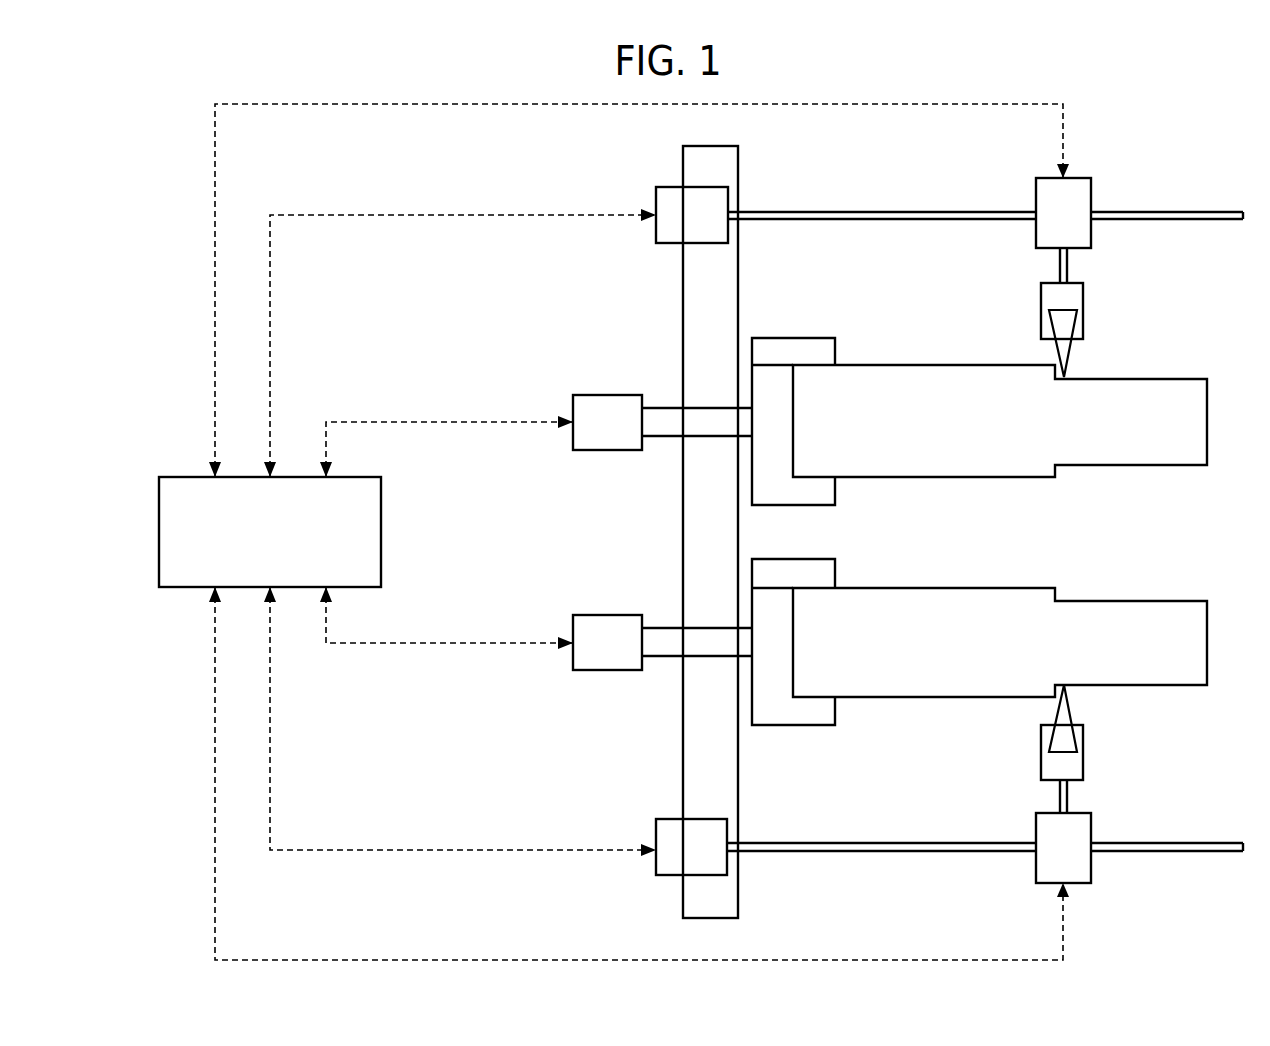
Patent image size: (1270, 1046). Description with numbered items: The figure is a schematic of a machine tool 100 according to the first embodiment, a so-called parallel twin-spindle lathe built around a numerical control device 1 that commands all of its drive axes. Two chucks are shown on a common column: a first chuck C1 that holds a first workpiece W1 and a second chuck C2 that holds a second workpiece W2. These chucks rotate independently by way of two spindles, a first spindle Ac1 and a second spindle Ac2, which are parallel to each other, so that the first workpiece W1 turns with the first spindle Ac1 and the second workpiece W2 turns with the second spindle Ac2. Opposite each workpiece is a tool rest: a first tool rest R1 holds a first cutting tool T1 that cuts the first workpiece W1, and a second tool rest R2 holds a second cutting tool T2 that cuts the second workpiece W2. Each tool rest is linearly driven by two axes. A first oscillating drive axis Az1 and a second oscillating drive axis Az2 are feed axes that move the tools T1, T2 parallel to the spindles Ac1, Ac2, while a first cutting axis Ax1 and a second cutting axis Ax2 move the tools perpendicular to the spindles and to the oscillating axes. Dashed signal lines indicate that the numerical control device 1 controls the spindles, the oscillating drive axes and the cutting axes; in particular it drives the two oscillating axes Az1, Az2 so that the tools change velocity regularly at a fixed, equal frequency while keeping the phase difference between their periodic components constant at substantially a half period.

The numerical control device 1 is at (381, 532).
The machine tool 100 is at (1176, 185).
The first chuck C1 is at (800, 338).
The second chuck C2 is at (800, 725).
The first workpiece W1 is at (890, 365).
The second workpiece W2 is at (890, 698).
The first tool rest R1 is at (1041, 312).
The second tool rest R2 is at (1041, 768).
The first cutting tool T1 is at (1057, 353).
The second cutting tool T2 is at (1057, 712).
The first spindle Ac1 is at (660, 398).
The second spindle Ac2 is at (660, 618).
The first cutting axis Ax1 is at (1112, 243).
The second cutting axis Ax2 is at (1119, 748).
The first oscillating drive axis Az1 is at (862, 195).
The second oscillating drive axis Az2 is at (865, 884).